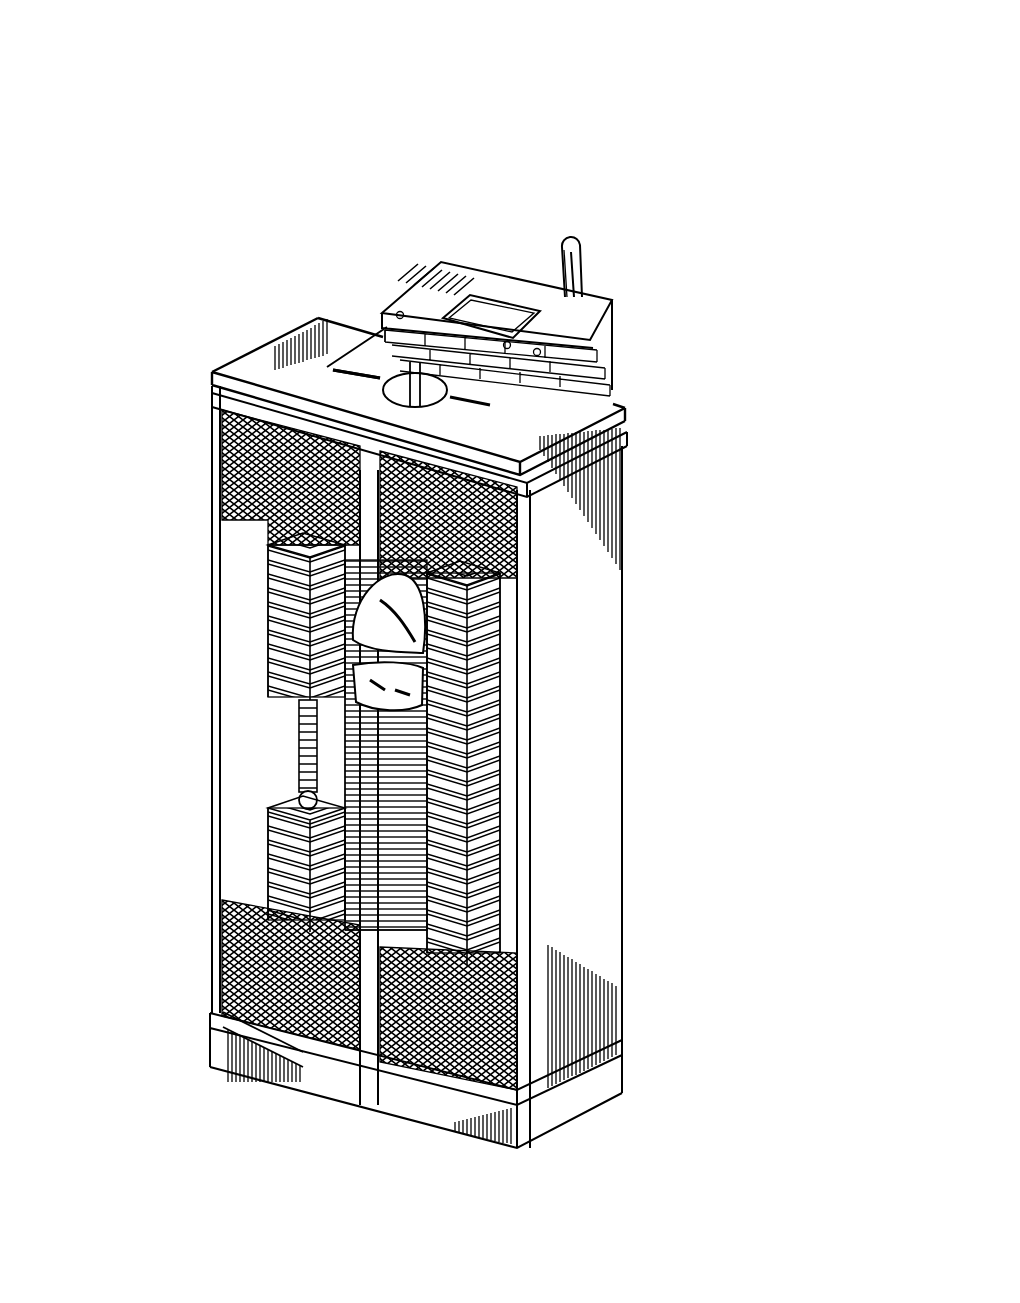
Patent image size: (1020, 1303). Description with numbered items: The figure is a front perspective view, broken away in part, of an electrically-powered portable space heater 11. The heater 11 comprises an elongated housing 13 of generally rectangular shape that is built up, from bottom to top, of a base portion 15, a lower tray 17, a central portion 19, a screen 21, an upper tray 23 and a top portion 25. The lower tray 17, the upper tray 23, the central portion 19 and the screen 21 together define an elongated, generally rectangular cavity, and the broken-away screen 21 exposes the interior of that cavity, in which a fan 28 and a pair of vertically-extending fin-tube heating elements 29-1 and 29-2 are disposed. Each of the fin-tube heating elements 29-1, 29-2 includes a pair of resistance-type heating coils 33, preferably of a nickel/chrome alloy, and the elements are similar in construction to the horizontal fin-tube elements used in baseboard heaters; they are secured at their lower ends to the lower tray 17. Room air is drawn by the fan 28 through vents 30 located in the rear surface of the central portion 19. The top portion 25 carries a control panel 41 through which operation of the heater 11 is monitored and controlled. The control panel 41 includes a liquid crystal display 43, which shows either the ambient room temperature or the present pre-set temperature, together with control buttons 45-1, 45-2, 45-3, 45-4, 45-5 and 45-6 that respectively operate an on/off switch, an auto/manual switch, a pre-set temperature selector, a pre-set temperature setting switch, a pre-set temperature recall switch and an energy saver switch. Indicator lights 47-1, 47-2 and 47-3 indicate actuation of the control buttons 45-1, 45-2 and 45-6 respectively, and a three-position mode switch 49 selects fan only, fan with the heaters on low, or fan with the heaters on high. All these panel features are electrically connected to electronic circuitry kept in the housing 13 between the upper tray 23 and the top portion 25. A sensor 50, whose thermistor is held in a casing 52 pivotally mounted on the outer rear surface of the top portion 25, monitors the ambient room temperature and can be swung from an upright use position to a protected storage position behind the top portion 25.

The heater 11 is at (152, 265).
The housing 13 is at (645, 563).
The base portion 15 is at (273, 1063).
The lower tray 17 is at (210, 1040).
The central portion 19 is at (600, 796).
The screen 21 is at (222, 497).
The upper tray 23 is at (212, 398).
The top portion 25 is at (200, 345).
The fan 28 is at (270, 661).
The fin-tube heating element 29-1 is at (262, 598).
The fin-tube heating element 29-2 is at (492, 930).
The vents 30 is at (300, 803).
The resistance-type heating coils 33 is at (330, 760).
The control panel 41 is at (493, 287).
The liquid crystal display 43 is at (463, 262).
The control button 45-1 is at (603, 350).
The control button 45-2 is at (607, 366).
The control button 45-3 is at (610, 393).
The control button 45-4 is at (327, 367).
The control button 45-5 is at (385, 328).
The control button 45-6 is at (384, 318).
The indicator light 47-1 is at (512, 346).
The indicator light 47-2 is at (542, 349).
The indicator light 47-3 is at (400, 312).
The three-position mode switch 49 is at (618, 424).
The sensor 50 is at (553, 250).
The casing 52 is at (579, 245).